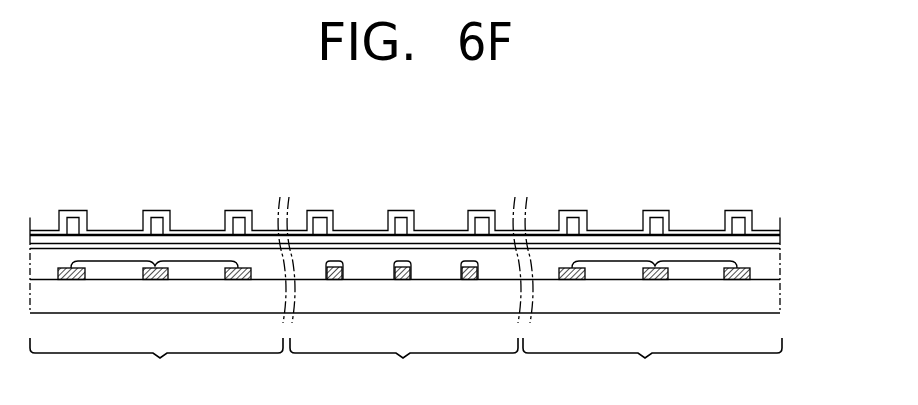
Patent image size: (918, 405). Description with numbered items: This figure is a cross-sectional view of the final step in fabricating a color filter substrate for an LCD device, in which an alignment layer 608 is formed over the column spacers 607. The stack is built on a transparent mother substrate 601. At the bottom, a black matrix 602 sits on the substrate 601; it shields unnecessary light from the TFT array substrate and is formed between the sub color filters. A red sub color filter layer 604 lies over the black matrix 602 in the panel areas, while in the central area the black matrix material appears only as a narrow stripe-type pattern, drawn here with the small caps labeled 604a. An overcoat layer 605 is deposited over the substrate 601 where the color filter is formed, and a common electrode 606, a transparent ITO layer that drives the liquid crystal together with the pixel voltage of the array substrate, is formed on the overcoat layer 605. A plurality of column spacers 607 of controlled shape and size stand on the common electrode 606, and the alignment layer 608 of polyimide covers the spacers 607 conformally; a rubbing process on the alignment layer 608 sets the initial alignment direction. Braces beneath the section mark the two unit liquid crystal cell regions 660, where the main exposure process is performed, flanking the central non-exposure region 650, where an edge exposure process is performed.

The transparent mother substrate 601 is at (768, 297).
The black matrix 602 is at (747, 267).
The red sub color filter layer 604 is at (620, 260).
The dummy emitter 604a is at (398, 263).
The overcoat layer 605 is at (768, 269).
The common electrode 606 is at (770, 242).
The column spacer 607 is at (571, 228).
The alignment layer 608 is at (347, 232).
The non-exposure region 650 is at (404, 362).
The unit liquid crystal cell region 660 is at (406, 362).